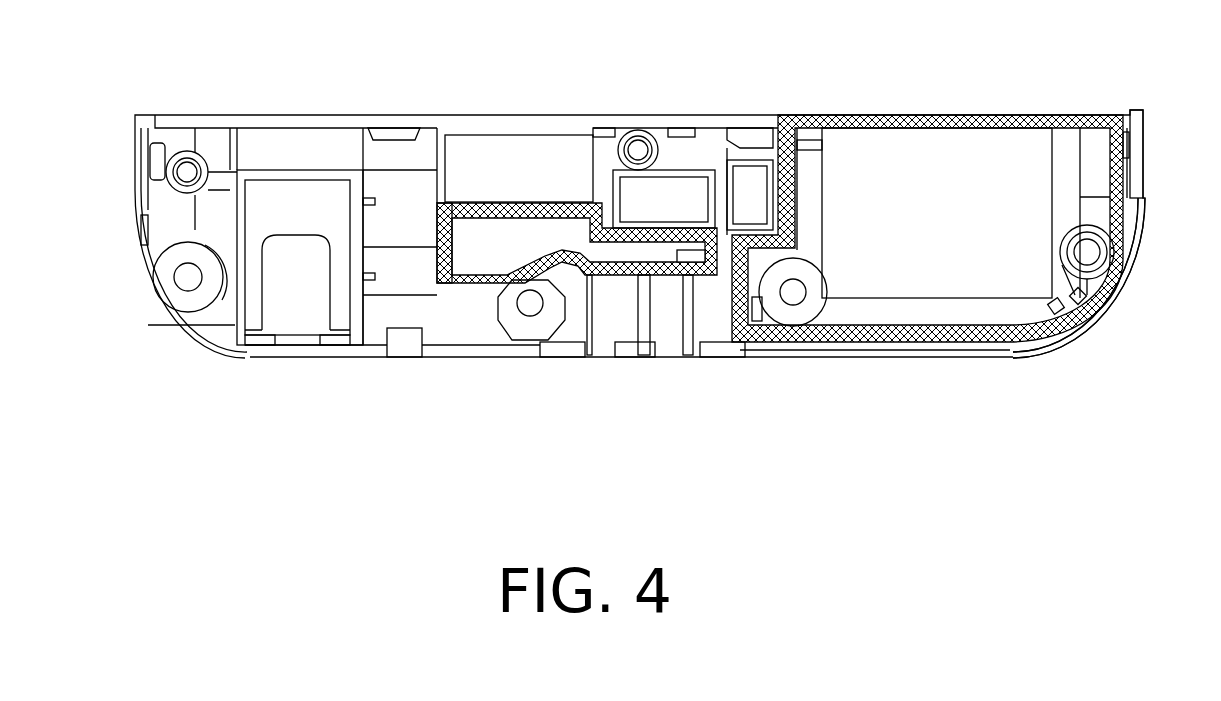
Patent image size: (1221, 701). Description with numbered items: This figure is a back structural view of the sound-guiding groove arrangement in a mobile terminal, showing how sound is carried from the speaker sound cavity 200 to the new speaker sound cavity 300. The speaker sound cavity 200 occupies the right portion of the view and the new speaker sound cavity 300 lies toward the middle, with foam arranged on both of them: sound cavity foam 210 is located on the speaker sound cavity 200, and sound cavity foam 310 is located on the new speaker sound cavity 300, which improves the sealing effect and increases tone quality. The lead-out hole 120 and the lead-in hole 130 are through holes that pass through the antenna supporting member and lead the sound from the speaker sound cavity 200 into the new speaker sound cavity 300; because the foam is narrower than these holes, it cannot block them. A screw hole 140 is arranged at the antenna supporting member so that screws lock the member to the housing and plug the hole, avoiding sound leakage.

The lead-out hole 120 is at (755, 263).
The lead-in hole 130 is at (688, 262).
The screw hole 140 is at (1080, 243).
The speaker sound cavity 200 is at (972, 272).
The sound cavity foam 210 is at (1088, 323).
The new speaker sound cavity 300 is at (492, 252).
The sound cavity foam 310 is at (442, 265).